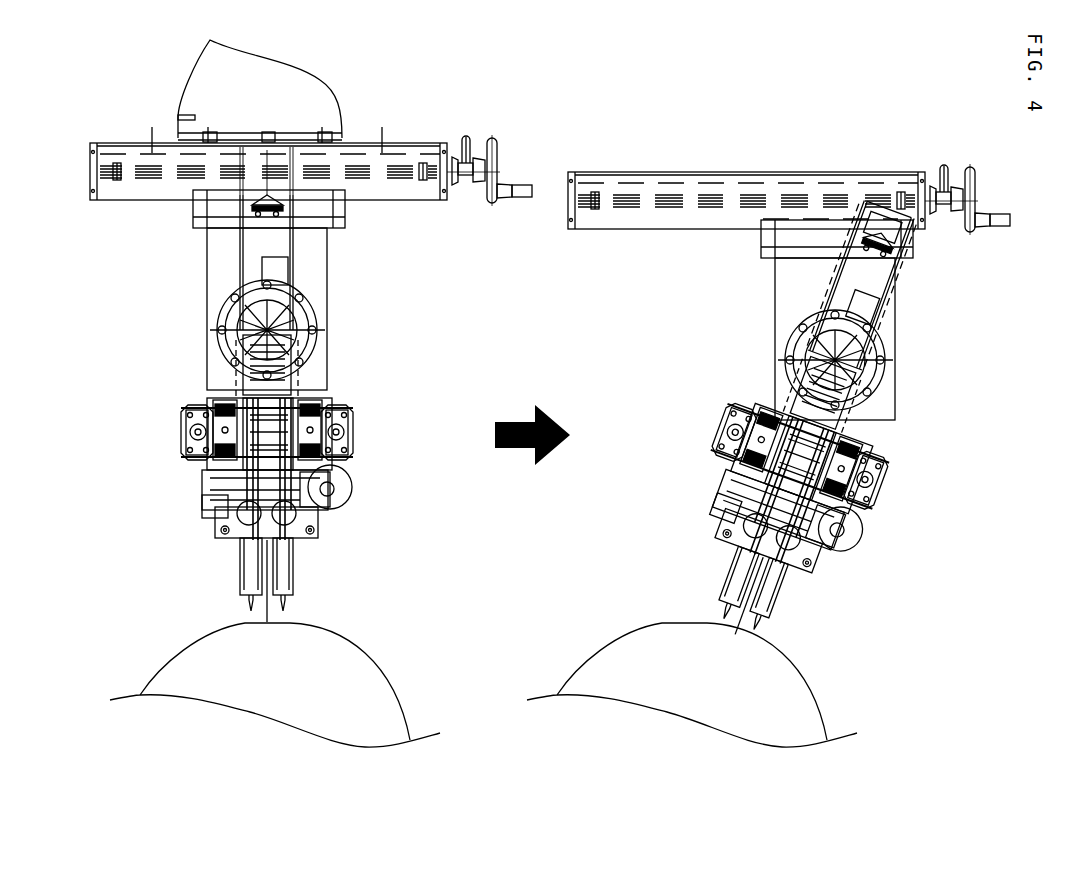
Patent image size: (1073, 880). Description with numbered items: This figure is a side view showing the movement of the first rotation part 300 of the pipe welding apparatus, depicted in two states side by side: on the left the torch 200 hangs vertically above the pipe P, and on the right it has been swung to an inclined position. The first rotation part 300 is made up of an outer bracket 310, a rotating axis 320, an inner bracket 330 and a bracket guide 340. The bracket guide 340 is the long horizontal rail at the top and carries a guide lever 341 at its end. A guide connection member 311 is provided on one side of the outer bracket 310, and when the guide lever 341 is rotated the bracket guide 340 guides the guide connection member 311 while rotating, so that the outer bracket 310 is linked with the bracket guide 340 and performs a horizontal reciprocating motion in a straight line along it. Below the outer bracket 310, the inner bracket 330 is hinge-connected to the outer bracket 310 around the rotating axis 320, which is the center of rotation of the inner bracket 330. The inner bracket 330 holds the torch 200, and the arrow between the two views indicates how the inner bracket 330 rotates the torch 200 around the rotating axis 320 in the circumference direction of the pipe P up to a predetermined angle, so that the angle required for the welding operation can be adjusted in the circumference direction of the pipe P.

The first rotation part 300 is at (140, 97).
The bracket guide 340 is at (363, 163).
The guide lever 341 is at (490, 140).
The guide connection member 311 is at (317, 210).
The outer bracket 310 is at (317, 255).
The rotating axis 320 is at (307, 287).
The inner bracket 330 is at (320, 382).
The torch 200 is at (247, 568).
The pipe P is at (377, 667).